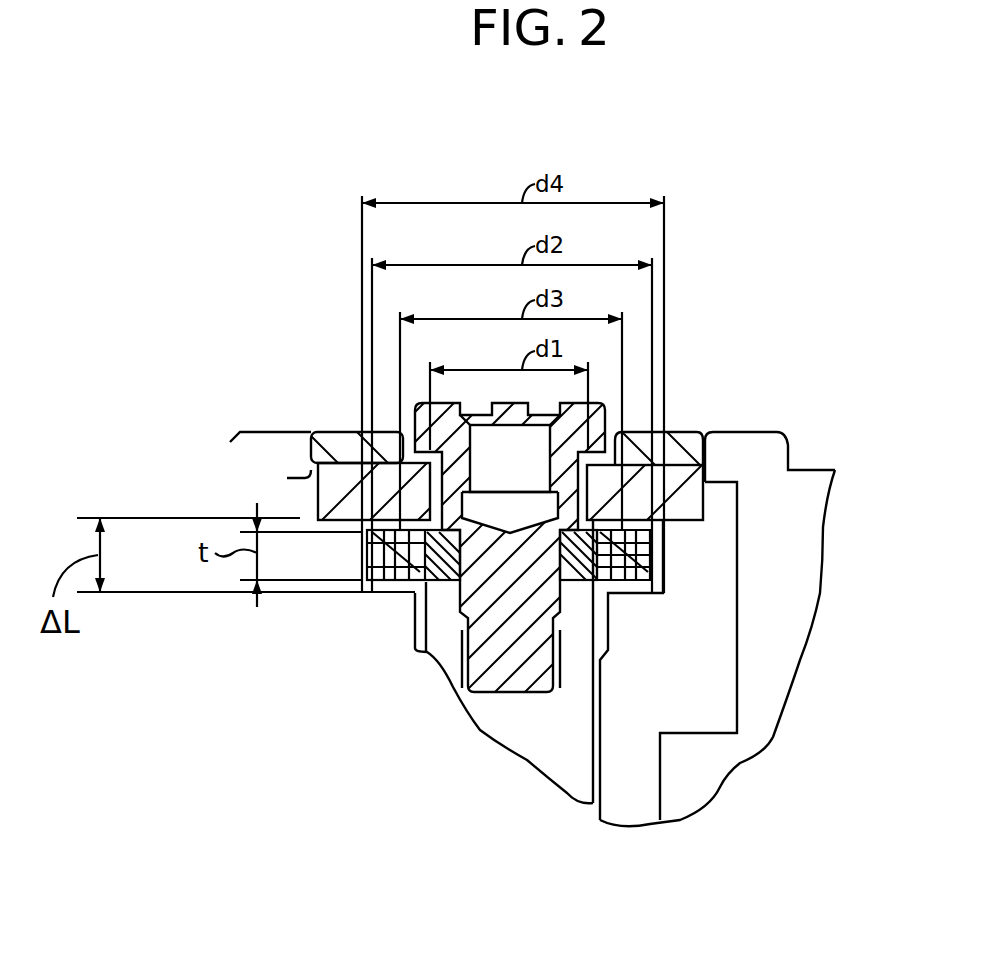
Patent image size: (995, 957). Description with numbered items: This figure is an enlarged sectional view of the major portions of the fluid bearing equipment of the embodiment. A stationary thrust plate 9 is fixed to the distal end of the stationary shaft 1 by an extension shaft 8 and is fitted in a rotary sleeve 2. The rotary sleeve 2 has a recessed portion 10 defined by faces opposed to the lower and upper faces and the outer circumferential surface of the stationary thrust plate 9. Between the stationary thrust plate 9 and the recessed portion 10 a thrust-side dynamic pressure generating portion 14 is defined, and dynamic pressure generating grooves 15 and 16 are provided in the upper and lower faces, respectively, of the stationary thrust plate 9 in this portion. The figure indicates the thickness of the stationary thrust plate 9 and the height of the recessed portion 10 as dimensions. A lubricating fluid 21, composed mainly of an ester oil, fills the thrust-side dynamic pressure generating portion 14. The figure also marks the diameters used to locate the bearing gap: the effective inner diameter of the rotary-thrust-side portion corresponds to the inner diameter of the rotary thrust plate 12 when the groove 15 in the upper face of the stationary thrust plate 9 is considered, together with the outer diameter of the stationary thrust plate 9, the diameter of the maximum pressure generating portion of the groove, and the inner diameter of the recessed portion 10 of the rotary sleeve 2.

The stationary shaft 1 is at (563, 768).
The rotary sleeve 2 is at (793, 587).
The extension shaft 8 is at (498, 668).
The stationary thrust plate 9 is at (640, 557).
The recessed portion 10 is at (380, 580).
The rotary thrust plate 12 is at (690, 483).
The thrust-side dynamic pressure generating portion 14 is at (640, 525).
The dynamic pressure generating groove 15 is at (600, 537).
The dynamic pressure generating groove 16 is at (647, 577).
The lubricating fluid 21 is at (607, 635).